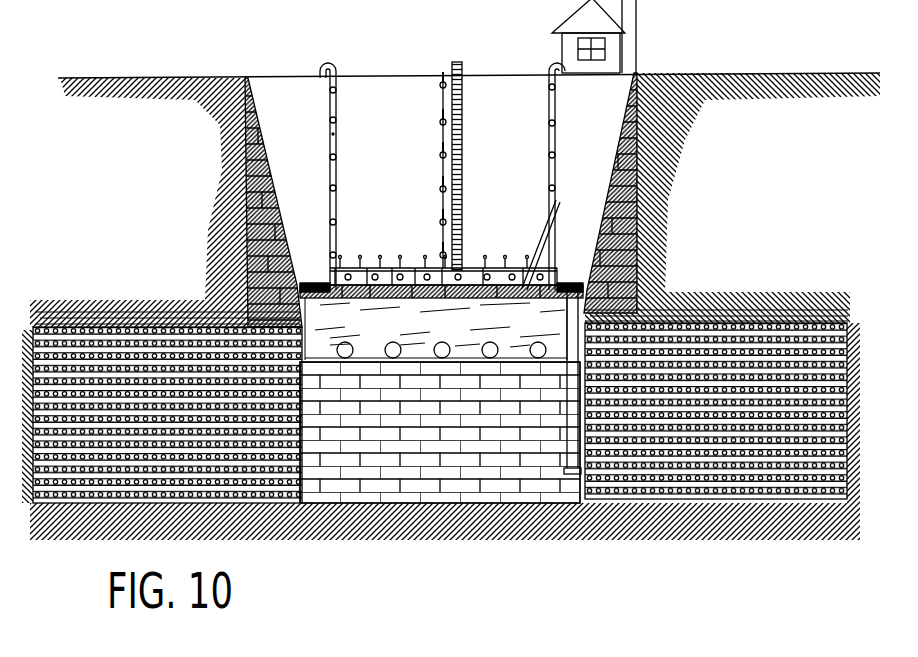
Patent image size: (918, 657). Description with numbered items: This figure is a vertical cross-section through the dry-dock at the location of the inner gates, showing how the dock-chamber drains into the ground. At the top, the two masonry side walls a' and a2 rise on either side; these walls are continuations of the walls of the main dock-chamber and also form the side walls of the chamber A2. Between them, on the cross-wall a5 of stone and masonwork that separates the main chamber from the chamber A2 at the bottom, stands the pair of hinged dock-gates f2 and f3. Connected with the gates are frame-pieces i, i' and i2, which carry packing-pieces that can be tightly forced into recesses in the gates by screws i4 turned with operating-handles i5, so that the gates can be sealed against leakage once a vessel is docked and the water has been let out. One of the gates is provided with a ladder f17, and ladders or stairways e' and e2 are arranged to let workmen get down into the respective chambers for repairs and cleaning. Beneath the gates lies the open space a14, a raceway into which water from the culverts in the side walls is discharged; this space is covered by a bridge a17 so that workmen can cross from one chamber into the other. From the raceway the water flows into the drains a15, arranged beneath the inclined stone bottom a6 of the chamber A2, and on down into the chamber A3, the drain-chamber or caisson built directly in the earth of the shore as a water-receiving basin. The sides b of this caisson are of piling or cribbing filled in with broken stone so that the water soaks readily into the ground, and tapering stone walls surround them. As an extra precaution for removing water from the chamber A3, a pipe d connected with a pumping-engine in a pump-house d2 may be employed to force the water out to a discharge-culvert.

The side wall a2 is at (165, 202).
The side wall a' is at (732, 198).
The inclined bottom a6 is at (312, 283).
The house d2 is at (613, 47).
The chamber A2 is at (492, 204).
The ladder e' is at (442, 176).
The frame-piece i' is at (439, 117).
The hinged dock-gate f3 is at (377, 142).
The hinged dock-gate f2 is at (493, 142).
The ladder f17 is at (462, 170).
The frame-piece i2 is at (438, 167).
The screw i4 is at (340, 188).
The operating-handle i5 is at (440, 213).
The frame-piece i is at (357, 250).
The ladder e2 is at (548, 258).
The bridge a17 is at (413, 268).
The open space a14 is at (436, 329).
The drain a15 is at (348, 350).
The cross-wall a5 is at (440, 432).
The chamber A3 is at (440, 432).
The pipe d is at (572, 415).
The side b is at (145, 345).